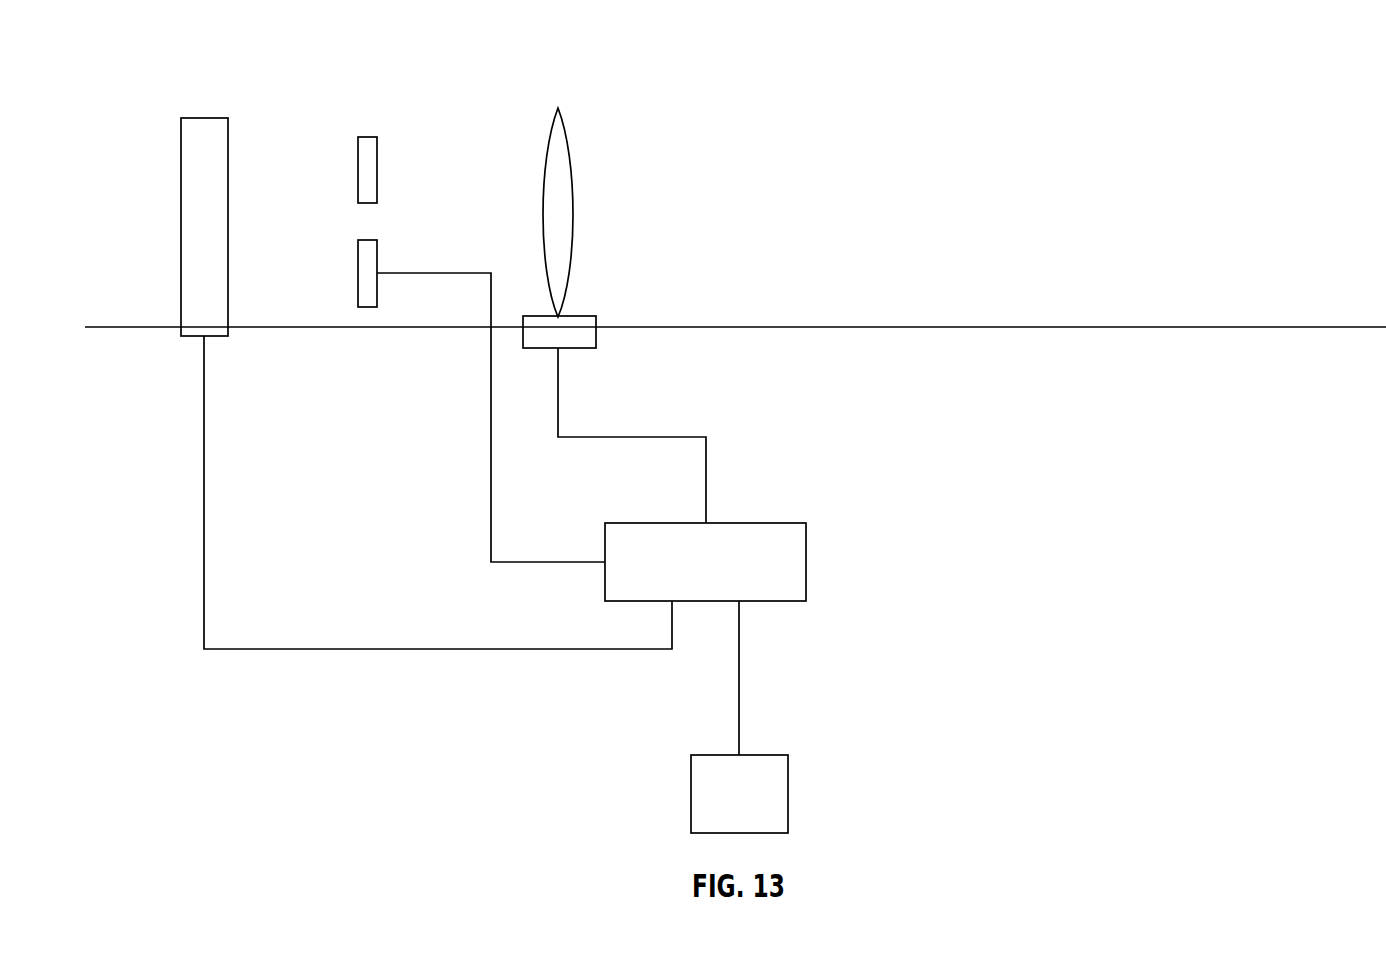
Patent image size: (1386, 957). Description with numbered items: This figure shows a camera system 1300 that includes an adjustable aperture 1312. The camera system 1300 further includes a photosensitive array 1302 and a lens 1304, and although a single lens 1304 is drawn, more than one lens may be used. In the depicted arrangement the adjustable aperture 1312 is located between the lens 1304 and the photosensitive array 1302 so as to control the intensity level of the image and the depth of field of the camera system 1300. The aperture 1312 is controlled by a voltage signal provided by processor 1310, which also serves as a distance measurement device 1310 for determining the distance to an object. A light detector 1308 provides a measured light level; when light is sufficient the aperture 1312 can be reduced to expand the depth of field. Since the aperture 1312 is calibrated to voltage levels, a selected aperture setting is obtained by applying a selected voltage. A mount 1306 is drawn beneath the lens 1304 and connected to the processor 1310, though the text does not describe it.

The camera system 1300 is at (106, 60).
The photosensitive array 1302 is at (202, 117).
The lens 1304 is at (558, 108).
The lens actuator 1306 is at (586, 316).
The light detector 1308 is at (790, 793).
The processor 1310 is at (808, 558).
The adjustable aperture 1312 is at (382, 163).